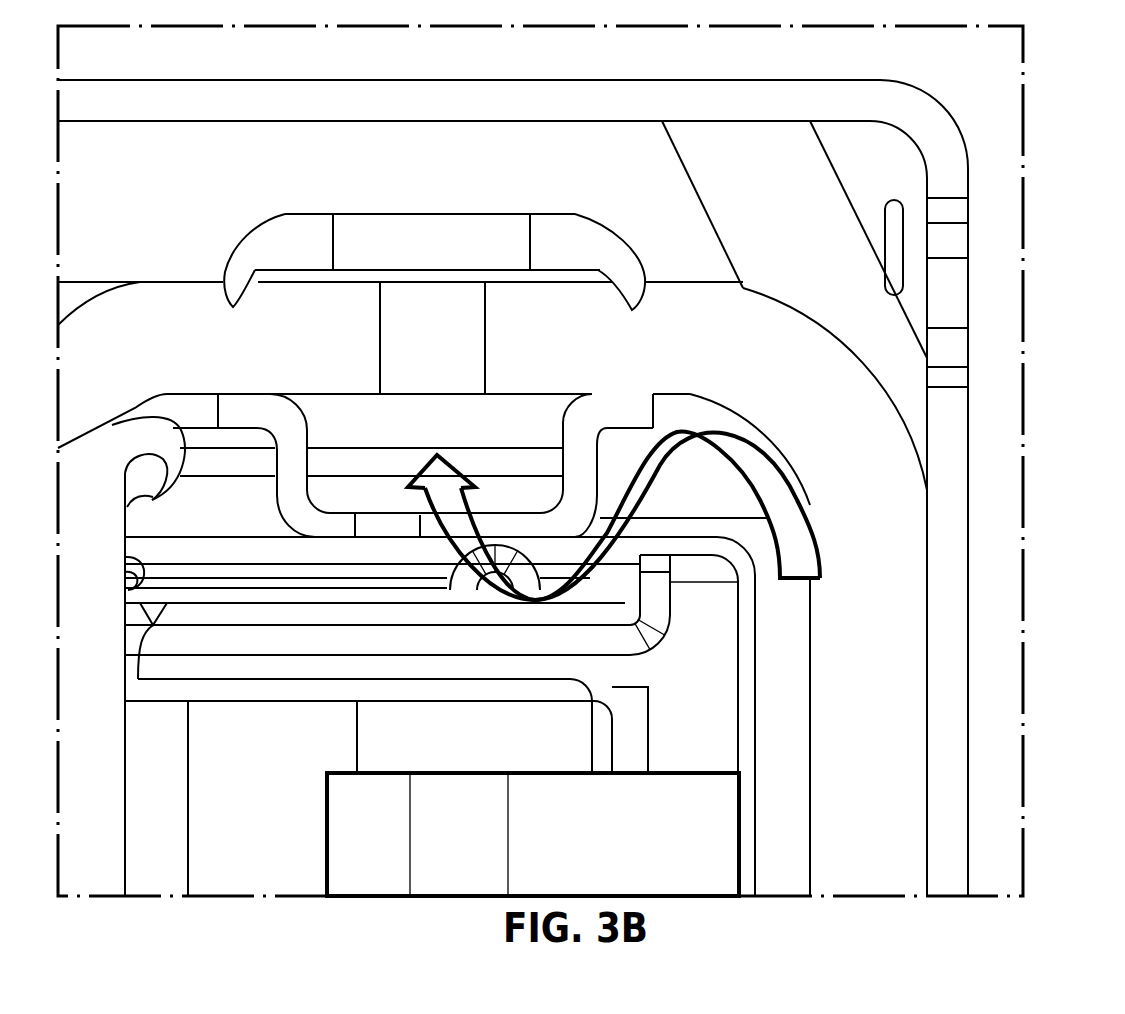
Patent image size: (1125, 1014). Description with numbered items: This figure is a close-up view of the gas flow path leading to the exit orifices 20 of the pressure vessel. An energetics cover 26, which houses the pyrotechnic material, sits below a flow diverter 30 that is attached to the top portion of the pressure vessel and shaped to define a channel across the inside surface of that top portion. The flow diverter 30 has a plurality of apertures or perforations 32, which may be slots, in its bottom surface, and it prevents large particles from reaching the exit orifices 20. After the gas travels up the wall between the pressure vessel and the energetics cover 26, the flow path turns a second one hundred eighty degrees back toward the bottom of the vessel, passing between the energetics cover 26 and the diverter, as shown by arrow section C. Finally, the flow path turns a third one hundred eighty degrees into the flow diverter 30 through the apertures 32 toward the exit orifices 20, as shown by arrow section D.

The exit orifice 20 is at (435, 327).
The energetics cover 26 is at (748, 783).
The flow diverter 30 is at (618, 420).
The apertures or perforations 32 is at (380, 528).
The arrow section C is at (832, 542).
The arrow section D is at (400, 457).